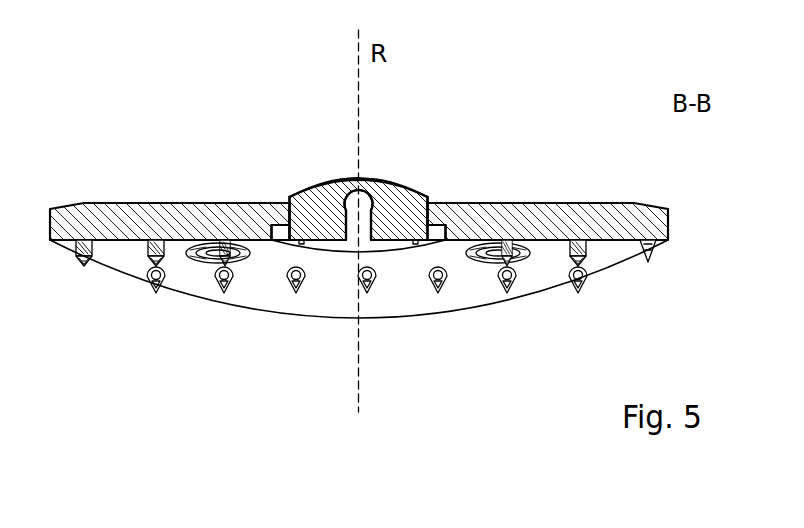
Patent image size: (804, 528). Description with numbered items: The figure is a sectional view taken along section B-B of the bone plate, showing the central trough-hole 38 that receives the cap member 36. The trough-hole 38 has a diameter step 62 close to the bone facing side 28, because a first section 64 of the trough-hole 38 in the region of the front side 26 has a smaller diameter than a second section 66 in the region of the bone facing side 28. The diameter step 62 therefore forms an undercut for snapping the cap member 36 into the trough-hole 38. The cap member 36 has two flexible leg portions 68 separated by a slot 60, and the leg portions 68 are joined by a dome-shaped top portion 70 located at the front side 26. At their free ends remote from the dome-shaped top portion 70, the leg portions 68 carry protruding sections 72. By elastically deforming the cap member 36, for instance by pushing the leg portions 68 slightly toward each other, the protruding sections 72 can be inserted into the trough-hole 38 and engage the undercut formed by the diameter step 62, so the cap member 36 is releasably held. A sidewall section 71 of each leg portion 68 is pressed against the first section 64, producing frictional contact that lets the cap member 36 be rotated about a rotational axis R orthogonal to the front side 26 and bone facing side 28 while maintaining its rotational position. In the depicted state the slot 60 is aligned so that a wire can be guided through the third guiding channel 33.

The front side 26 is at (627, 200).
The bone facing side 28 is at (603, 252).
The third guiding channel 33 is at (347, 243).
The cap member 36 is at (381, 198).
The trough-hole 38 is at (430, 197).
The slot 60 is at (355, 195).
The diameter step 62 is at (265, 202).
The first section 64 is at (443, 200).
The second section 66 is at (444, 246).
The flexible leg portions 68 is at (323, 207).
The dome-shaped top portion 70 is at (372, 190).
The sidewall section 71 is at (290, 202).
The protruding sections 72 is at (288, 244).